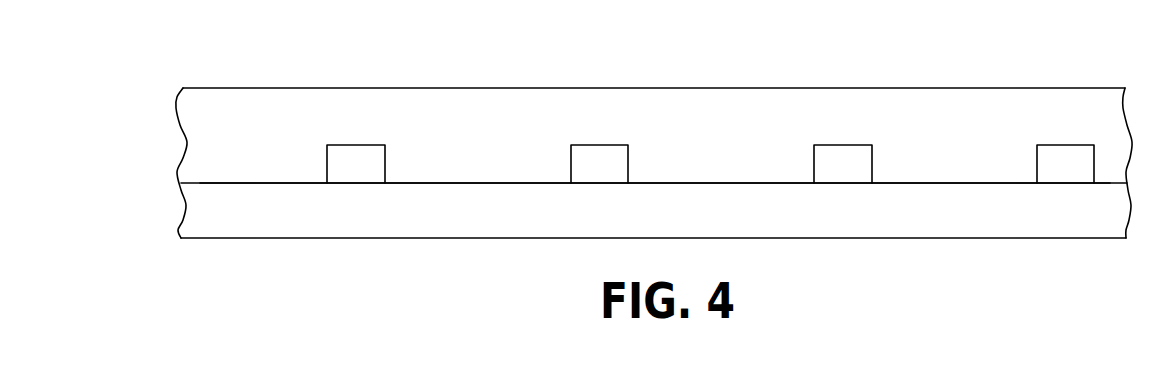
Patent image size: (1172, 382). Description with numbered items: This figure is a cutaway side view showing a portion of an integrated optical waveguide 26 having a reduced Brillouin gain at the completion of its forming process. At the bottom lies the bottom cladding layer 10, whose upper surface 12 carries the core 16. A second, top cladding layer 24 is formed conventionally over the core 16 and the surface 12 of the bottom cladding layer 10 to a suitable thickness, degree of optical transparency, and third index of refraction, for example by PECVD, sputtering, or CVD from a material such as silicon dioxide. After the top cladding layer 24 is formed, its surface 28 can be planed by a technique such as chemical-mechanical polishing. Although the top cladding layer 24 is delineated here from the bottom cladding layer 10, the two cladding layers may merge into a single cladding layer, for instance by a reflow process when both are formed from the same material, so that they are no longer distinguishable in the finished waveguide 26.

The bottom cladding layer 10 is at (1118, 217).
The surface of the bottom cladding layer 12 is at (202, 177).
The core 16 is at (348, 145).
The top cladding layer 24 is at (1115, 98).
The integrated optical waveguide 26 is at (1088, 267).
The surface of the top cladding layer 28 is at (203, 86).